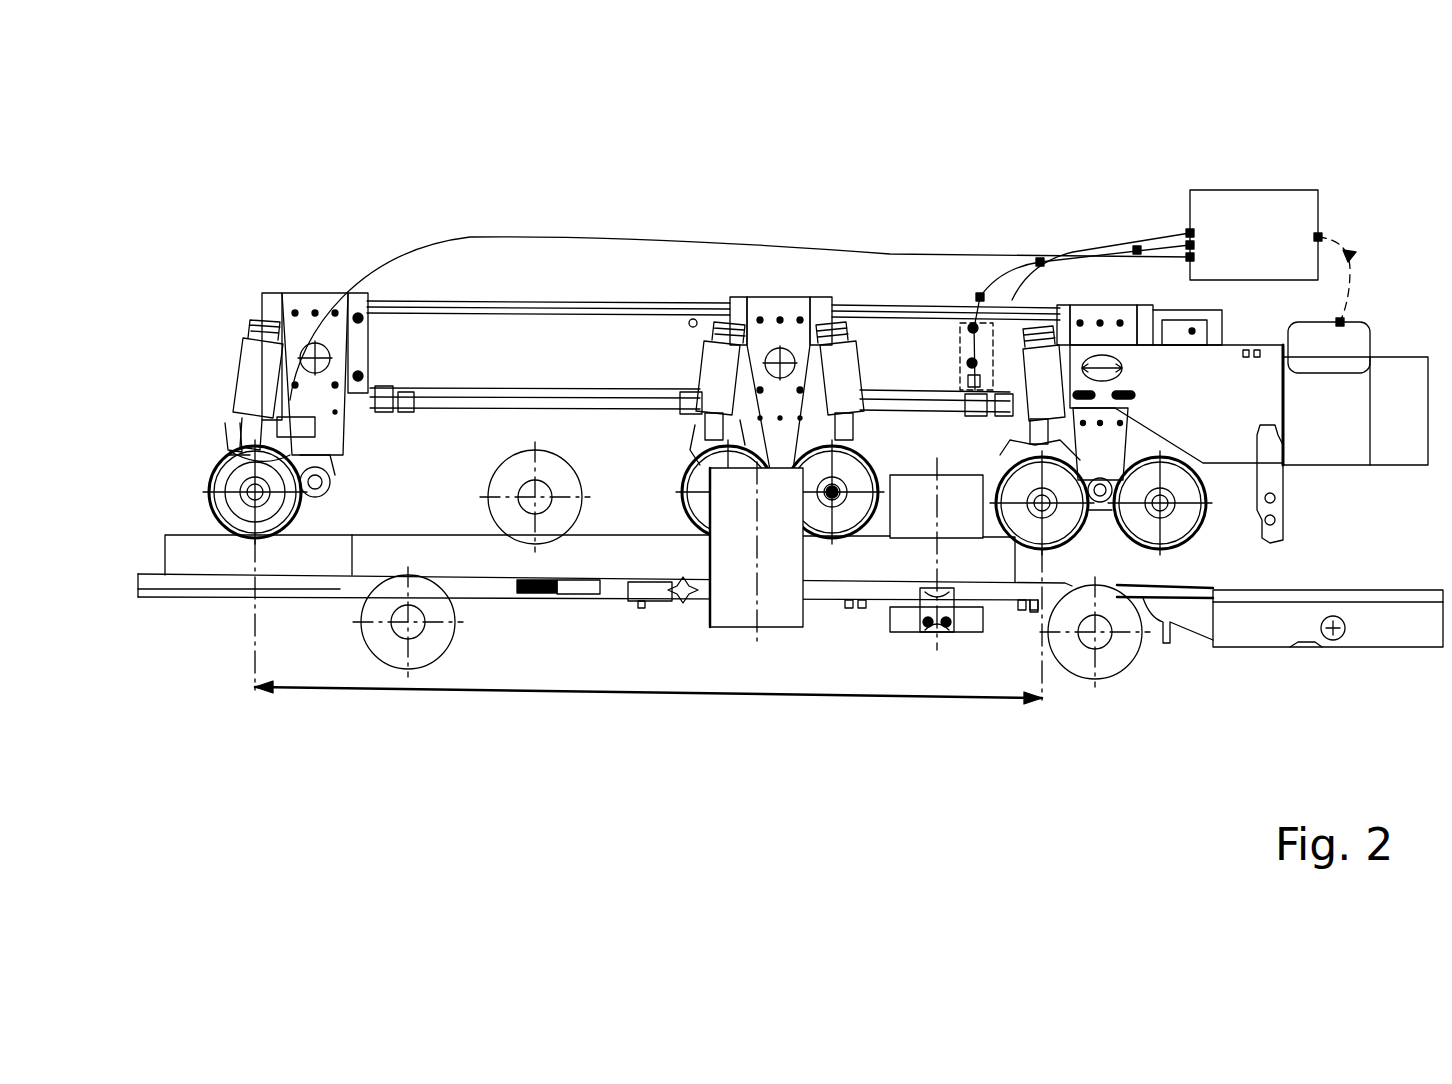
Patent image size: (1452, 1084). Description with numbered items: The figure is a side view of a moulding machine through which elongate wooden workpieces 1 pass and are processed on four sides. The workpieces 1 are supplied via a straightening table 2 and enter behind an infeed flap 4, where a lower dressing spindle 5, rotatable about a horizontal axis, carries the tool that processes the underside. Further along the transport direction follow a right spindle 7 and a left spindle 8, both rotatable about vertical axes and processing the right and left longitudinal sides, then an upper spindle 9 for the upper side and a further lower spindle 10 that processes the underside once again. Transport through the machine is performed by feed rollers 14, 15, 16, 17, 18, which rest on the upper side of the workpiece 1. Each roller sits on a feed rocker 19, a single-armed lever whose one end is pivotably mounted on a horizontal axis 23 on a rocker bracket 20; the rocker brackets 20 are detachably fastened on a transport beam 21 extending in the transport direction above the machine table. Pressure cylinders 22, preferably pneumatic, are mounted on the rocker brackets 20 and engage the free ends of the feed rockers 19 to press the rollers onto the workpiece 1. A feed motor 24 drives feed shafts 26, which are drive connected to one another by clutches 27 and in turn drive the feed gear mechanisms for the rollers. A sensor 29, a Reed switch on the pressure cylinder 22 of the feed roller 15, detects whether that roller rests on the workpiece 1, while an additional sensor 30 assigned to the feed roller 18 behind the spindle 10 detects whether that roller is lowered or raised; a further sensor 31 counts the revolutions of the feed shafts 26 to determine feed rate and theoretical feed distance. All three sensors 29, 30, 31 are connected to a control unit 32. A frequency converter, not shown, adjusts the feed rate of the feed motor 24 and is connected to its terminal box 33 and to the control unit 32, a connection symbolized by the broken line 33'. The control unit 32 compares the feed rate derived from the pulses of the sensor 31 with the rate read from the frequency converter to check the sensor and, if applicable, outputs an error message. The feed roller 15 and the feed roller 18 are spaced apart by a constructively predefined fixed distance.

The workpiece 1 is at (622, 563).
The straightening table 2 is at (1372, 632).
The infeed flap 4 is at (1292, 492).
The lower dressing spindle 5 is at (1117, 660).
The right spindle 7 is at (922, 515).
The left spindle 8 is at (773, 605).
The upper spindle 9 is at (518, 528).
The lower spindle 10 is at (395, 647).
The feed roller 14 is at (1185, 530).
The feed roller 15 is at (1020, 495).
The feed roller 16 is at (840, 485).
The feed roller 17 is at (686, 483).
The feed roller 18 is at (245, 515).
The feed rocker 19 is at (310, 502).
The rocker bracket 20 is at (312, 305).
The transport beam 21 is at (420, 343).
The pressure cylinder 22 is at (258, 377).
The horizontal axis 23 is at (325, 493).
The feed motor 24 is at (1390, 398).
The feed shaft 26 is at (463, 405).
The clutch 27 is at (713, 377).
The sensor 29 is at (1084, 530).
The sensor 30 is at (262, 318).
The sensor 31 is at (978, 323).
The control unit 32 is at (1240, 220).
The terminal box 33 is at (1354, 297).
The broken line 33' is at (1370, 236).